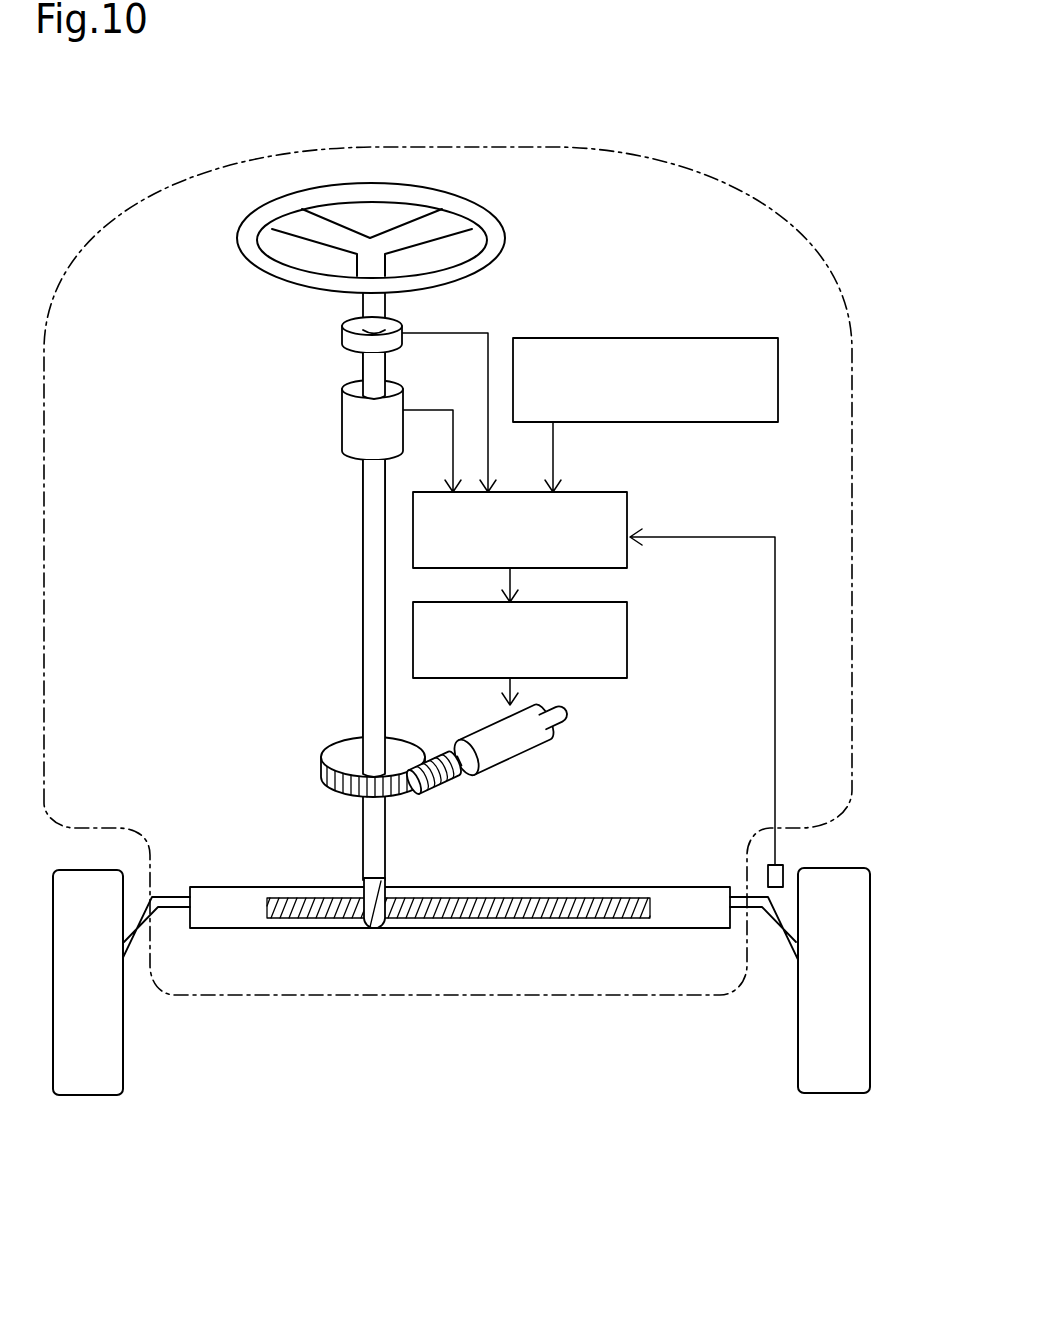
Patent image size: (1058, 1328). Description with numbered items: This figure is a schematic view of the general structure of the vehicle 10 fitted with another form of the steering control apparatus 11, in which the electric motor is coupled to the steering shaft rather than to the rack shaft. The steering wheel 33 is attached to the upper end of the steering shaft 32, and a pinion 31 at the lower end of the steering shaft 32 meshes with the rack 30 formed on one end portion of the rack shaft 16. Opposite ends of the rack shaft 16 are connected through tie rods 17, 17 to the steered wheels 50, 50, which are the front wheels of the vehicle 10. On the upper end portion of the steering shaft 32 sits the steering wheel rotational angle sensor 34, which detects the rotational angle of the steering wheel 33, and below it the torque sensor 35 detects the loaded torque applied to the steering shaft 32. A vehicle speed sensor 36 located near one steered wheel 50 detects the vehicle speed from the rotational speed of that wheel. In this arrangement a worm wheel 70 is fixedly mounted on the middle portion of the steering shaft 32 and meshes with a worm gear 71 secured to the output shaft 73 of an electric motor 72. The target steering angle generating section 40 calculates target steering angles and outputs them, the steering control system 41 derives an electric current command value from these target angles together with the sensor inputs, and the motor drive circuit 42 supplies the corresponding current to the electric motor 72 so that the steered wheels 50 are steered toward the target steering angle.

The automotive vehicle 10 is at (752, 205).
The steering control apparatus 11 is at (188, 420).
The rack shaft 16 is at (685, 915).
The tie rod 17 is at (137, 940).
The rack 30 is at (315, 905).
The pinion 31 is at (378, 930).
The steering shaft 32 is at (378, 840).
The steering wheel 33 is at (497, 229).
The steering wheel rotational angle sensor 34 is at (352, 340).
The torque sensor 35 is at (352, 425).
The vehicle speed sensor 36 is at (770, 875).
The target steering angle generating section 40 is at (780, 377).
The steering control system 41 is at (628, 513).
The motor drive circuit 42 is at (628, 641).
The steered wheel 50 is at (88, 1082).
The worm wheel 70 is at (335, 752).
The worm gear 71 is at (452, 785).
The electric motor 72 is at (518, 742).
The motor shaft 73 is at (562, 706).